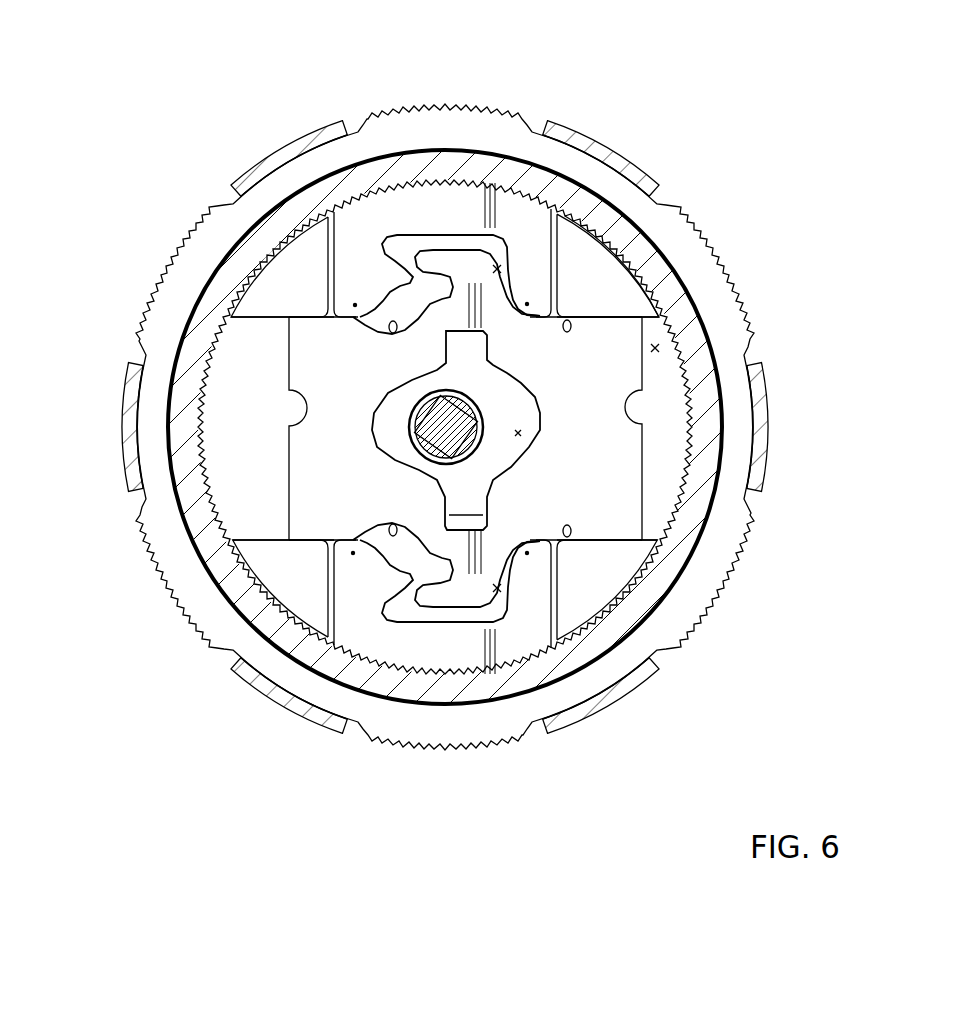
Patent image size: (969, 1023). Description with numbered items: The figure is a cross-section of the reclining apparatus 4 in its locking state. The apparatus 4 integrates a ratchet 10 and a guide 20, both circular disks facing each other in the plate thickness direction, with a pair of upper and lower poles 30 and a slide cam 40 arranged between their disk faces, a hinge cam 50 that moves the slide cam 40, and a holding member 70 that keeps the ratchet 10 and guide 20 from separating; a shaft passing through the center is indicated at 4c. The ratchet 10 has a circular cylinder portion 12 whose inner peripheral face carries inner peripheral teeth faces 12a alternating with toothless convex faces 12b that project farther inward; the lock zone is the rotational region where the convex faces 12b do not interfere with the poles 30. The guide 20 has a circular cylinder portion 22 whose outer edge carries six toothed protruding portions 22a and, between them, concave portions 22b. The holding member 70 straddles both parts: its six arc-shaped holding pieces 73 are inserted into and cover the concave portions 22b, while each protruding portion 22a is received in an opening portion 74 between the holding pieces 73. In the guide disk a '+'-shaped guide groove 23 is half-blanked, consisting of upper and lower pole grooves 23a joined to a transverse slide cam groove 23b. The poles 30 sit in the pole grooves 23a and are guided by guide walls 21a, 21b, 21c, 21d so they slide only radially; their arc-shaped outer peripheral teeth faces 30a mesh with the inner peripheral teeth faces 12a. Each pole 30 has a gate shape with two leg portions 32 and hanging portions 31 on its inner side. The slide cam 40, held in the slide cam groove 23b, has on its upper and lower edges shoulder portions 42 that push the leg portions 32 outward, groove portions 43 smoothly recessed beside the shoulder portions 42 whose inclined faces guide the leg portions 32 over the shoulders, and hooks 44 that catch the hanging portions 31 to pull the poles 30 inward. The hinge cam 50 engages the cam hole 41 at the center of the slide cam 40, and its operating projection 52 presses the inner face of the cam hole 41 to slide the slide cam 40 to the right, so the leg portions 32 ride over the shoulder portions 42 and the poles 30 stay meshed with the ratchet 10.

The reclining apparatus 4 is at (661, 78).
The output shaft 4c is at (440, 433).
The ratchet 10 is at (540, 180).
The circular cylinder portion 12 is at (484, 511).
The inner peripheral teeth faces 12a is at (460, 180).
The convex faces 12b is at (288, 250).
The guide 20 is at (218, 242).
The guide wall 21a is at (272, 302).
The guide wall 21b is at (592, 287).
The guide wall 21c is at (274, 557).
The guide wall 21d is at (616, 553).
The circular cylinder portion 22 is at (445, 433).
The protruding portions 22a is at (365, 795).
The concave portions 22b is at (300, 153).
The guide groove 23 is at (666, 455).
The pole grooves 23a is at (565, 220).
The slide cam groove 23b is at (660, 347).
The poles 30 is at (406, 205).
The outer peripheral teeth faces 30a is at (445, 425).
The hanging portions 31 is at (398, 274).
The leg portions 32 is at (355, 300).
The slide cam 40 is at (308, 440).
The cam hole 41 is at (520, 433).
The shoulder portions 42 is at (355, 307).
The groove portions 43 is at (392, 334).
The hooks 44 is at (431, 259).
The hinge cam 50 is at (385, 405).
The operating projection 52 is at (467, 507).
The holding member 70 is at (230, 183).
The holding pieces 73 is at (253, 175).
The opening portions 74 is at (445, 433).